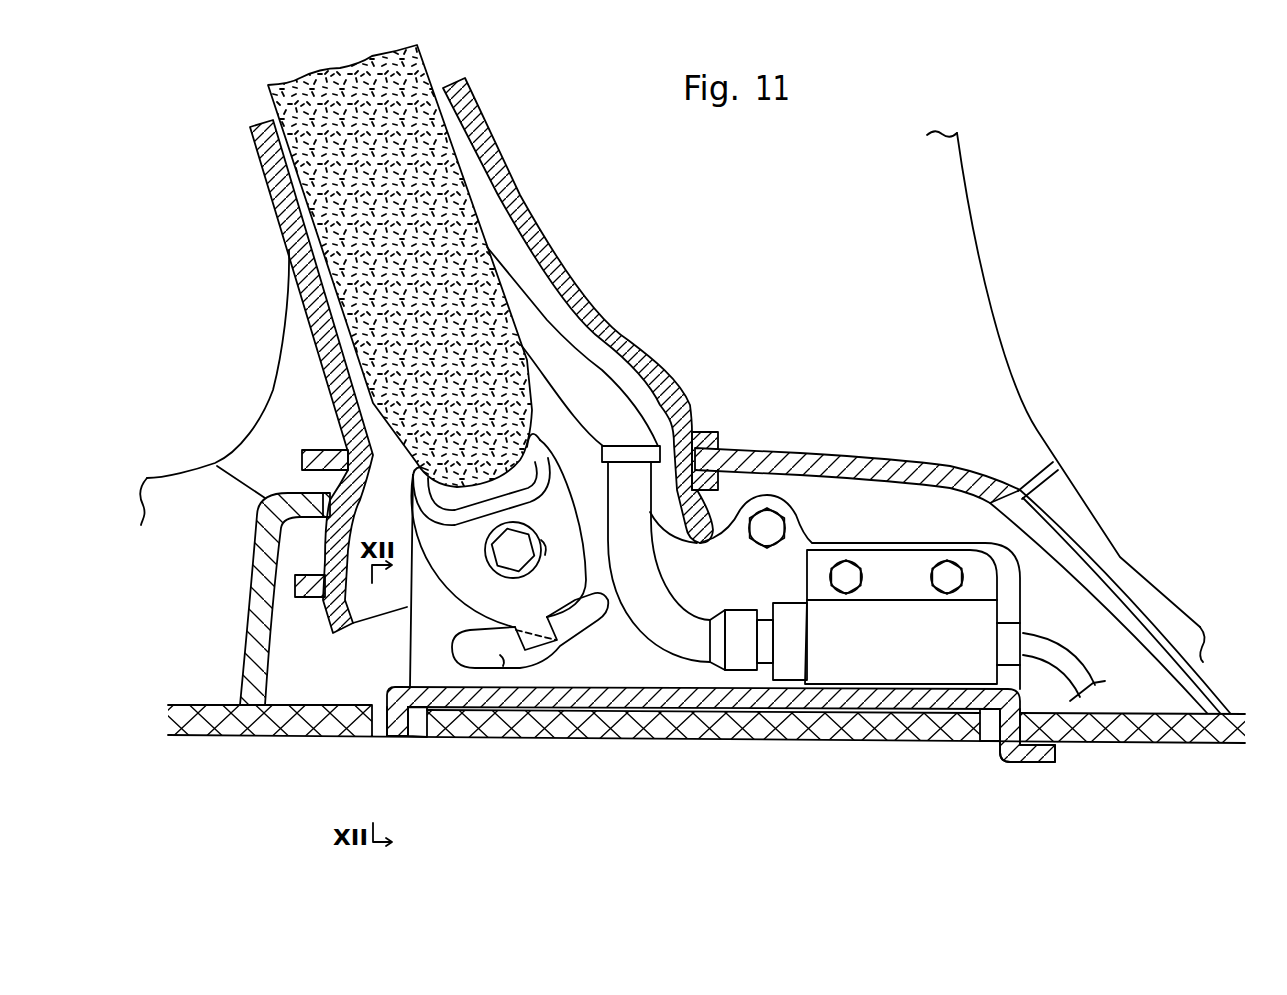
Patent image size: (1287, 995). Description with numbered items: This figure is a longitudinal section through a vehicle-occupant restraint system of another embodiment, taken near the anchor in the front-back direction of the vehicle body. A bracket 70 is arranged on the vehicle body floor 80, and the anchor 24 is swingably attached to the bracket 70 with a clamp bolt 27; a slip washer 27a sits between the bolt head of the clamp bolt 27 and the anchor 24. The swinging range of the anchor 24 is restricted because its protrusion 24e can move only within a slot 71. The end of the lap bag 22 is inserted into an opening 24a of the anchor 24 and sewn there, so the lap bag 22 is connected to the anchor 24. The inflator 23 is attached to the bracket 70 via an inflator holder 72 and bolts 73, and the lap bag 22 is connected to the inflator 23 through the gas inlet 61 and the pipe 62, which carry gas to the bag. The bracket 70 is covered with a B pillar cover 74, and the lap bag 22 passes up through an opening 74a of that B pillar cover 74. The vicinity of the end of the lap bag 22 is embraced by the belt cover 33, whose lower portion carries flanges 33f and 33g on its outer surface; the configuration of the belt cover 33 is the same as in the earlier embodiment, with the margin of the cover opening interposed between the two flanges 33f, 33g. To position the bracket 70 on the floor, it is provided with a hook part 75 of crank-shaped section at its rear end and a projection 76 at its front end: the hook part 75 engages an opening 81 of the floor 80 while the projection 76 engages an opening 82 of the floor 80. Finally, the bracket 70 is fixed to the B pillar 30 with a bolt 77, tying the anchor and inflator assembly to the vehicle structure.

The lap bag 22 is at (427, 60).
The inflator 23 is at (793, 652).
The anchor 24 is at (553, 465).
The opening 24a is at (462, 497).
The protrusion 24e is at (563, 650).
The clamp bolt 27 is at (520, 538).
The slip washer 27a is at (543, 552).
The B pillar 30 is at (1002, 297).
The belt cover 33 is at (524, 198).
The flange 33f is at (327, 448).
The flange 33g is at (306, 598).
The gas inlet 61 is at (580, 362).
The pipe 62 is at (663, 593).
The bracket 70 is at (423, 643).
The slot 71 is at (502, 658).
The inflator holder 72 is at (987, 612).
The bolts 73 is at (847, 570).
The B pillar cover 74 is at (847, 450).
The opening 74a is at (335, 495).
The hook part 75 is at (1033, 763).
The projection 76 is at (400, 740).
The bolt 77 is at (770, 516).
The vehicle body floor 80 is at (1120, 753).
The opening 81 is at (988, 743).
The opening 82 is at (423, 727).